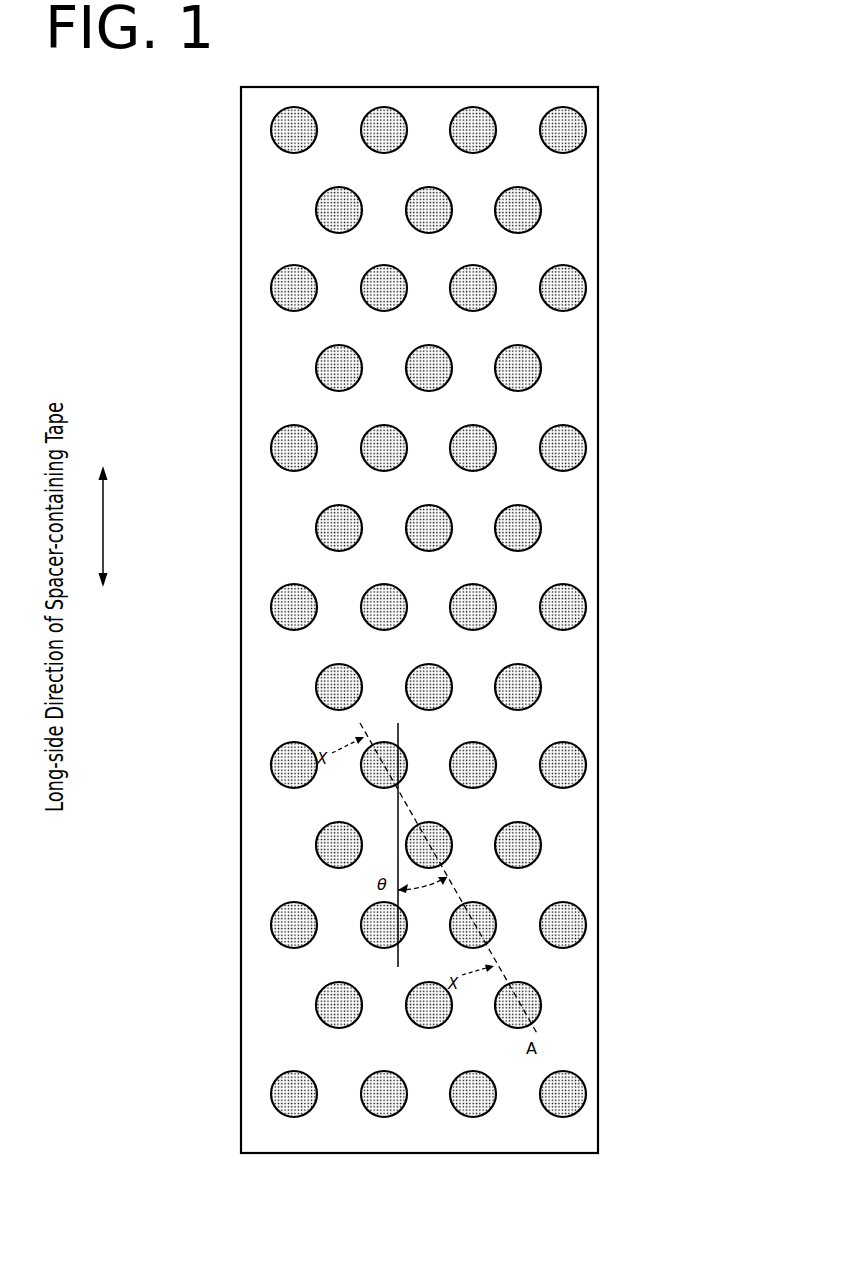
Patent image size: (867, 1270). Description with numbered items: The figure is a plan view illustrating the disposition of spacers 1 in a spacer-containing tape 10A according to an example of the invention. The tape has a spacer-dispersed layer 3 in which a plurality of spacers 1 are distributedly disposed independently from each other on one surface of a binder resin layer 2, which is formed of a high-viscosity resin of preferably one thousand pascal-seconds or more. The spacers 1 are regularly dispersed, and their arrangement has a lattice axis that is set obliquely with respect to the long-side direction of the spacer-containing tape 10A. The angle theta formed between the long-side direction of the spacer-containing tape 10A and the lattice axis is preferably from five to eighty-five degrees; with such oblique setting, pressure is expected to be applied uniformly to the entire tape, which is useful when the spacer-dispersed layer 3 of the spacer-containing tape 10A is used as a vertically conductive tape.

The spacer 1 is at (582, 442).
The binder resin layer 2 is at (577, 533).
The spacer-dispersed layer 3 is at (507, 620).
The spacer-containing tape 10A is at (208, 1197).